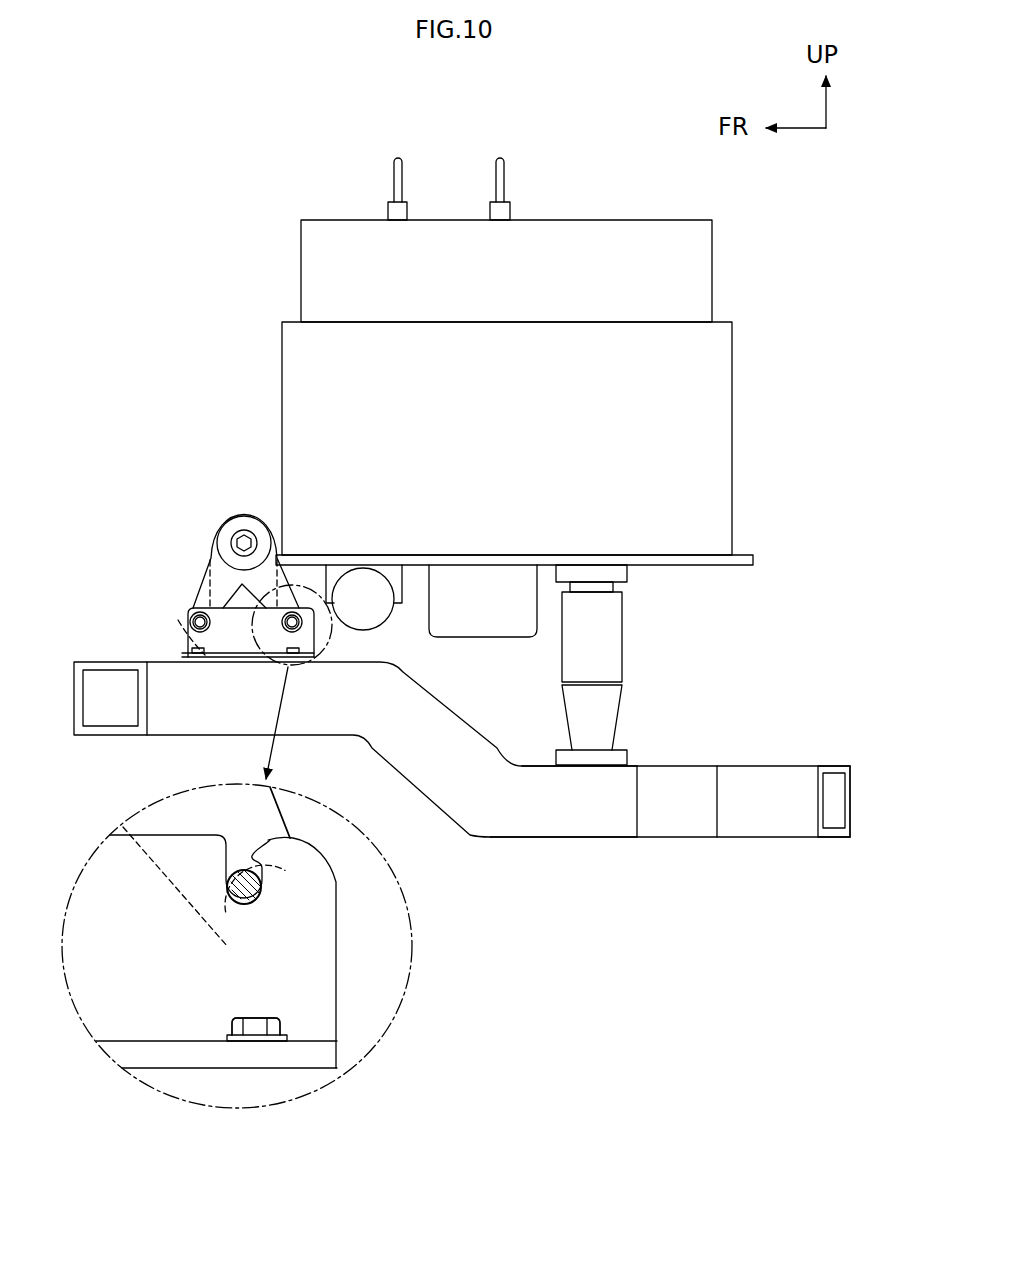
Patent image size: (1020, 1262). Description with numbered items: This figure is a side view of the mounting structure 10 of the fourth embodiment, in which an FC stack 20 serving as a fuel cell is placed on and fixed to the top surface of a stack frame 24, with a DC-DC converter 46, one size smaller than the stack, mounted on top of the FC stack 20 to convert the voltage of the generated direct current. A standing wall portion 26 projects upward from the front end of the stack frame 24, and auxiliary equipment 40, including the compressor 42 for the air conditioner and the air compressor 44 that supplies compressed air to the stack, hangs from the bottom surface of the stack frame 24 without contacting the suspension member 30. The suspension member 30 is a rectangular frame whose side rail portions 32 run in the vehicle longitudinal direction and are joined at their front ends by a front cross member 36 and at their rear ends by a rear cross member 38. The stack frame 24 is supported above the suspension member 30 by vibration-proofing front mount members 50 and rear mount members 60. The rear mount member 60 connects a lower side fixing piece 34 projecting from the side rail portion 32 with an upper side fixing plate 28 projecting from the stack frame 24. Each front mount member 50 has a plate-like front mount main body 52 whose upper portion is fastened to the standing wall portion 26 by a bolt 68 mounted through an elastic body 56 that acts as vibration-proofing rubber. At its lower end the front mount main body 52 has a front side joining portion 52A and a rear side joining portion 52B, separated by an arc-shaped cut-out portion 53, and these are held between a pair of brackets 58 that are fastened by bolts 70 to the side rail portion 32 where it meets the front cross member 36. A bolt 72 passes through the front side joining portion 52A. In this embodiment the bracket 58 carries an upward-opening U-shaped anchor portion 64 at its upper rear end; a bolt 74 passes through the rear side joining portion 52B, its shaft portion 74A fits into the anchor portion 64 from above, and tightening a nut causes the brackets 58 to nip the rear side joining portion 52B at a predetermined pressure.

The mounting structure 10 is at (156, 643).
The FC stack 20 is at (738, 426).
The stack frame 24 is at (760, 548).
The standing wall portion 26 is at (280, 567).
The upper side fixing plate 28 is at (620, 573).
The suspension member 30 is at (774, 759).
The side rail portion 32 is at (598, 818).
The lower side fixing piece 34 is at (622, 757).
The front cross member 36 is at (110, 730).
The rear cross member 38 is at (831, 840).
The auxiliary equipment 40 is at (510, 650).
The compressor for the air conditioner 42 is at (364, 612).
The air compressor 44 is at (437, 625).
The DC-DC converter 46 is at (700, 275).
The front mount member 50 is at (186, 594).
The front mount main body 52 is at (206, 576).
The front side joining portion 52A is at (178, 620).
The rear side joining portion 52B is at (318, 642).
The cut-out portion 53 is at (241, 610).
The elastic body 56 is at (250, 535).
The bracket 58 is at (190, 637).
The rear mount member 60 is at (632, 671).
The anchor portion 64 is at (262, 871).
The bolt 68 is at (236, 536).
The bolt 70 is at (198, 660).
The bolt 72 is at (204, 631).
The bolt 74 is at (288, 634).
The shaft portion 74A is at (240, 904).